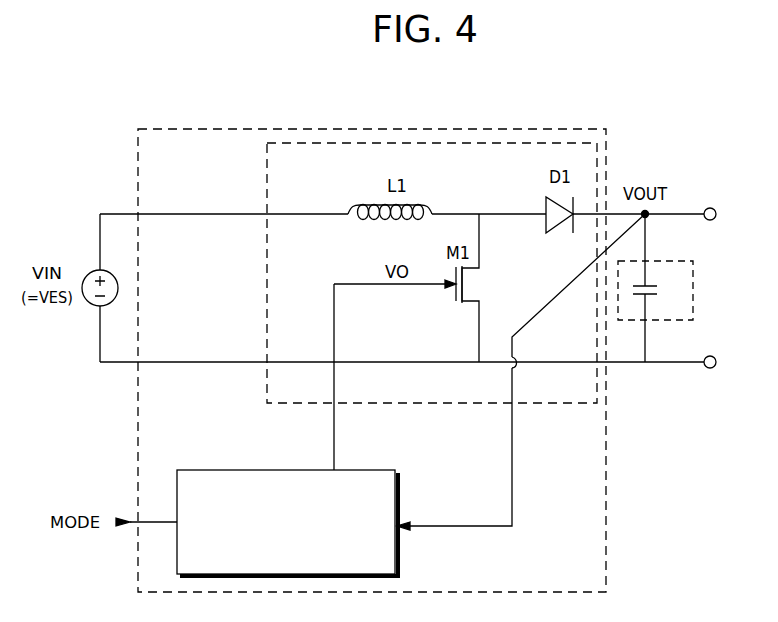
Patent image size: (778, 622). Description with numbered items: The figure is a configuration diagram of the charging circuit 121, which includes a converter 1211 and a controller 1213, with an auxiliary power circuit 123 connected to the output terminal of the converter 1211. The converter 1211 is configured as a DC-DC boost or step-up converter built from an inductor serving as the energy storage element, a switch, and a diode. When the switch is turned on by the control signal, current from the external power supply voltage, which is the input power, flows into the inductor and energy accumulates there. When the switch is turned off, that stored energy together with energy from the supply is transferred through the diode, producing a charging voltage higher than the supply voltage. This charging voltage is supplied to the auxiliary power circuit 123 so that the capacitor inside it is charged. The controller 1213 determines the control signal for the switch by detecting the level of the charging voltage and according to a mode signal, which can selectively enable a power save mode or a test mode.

The charging circuit 121 is at (205, 129).
The converter 1211 is at (597, 143).
The controller 1213 is at (355, 470).
The auxiliary power circuit 123 is at (693, 290).